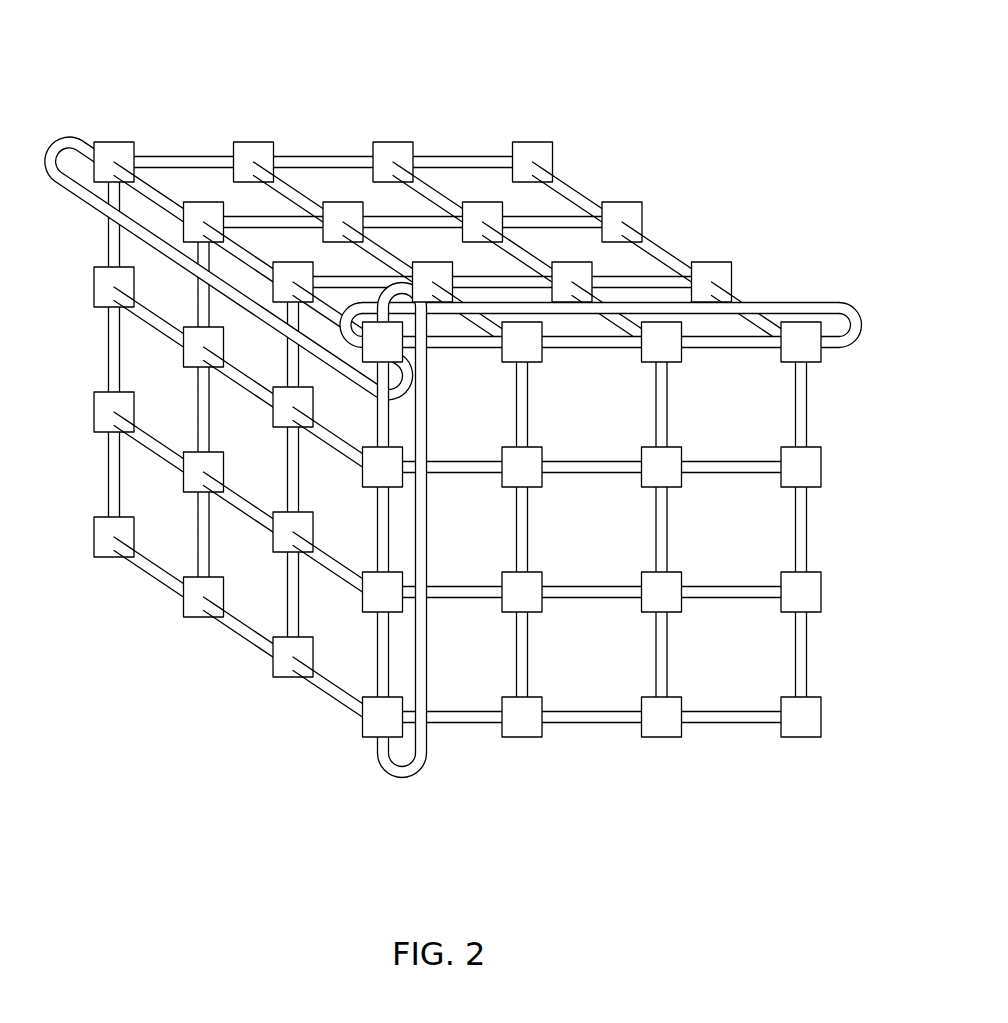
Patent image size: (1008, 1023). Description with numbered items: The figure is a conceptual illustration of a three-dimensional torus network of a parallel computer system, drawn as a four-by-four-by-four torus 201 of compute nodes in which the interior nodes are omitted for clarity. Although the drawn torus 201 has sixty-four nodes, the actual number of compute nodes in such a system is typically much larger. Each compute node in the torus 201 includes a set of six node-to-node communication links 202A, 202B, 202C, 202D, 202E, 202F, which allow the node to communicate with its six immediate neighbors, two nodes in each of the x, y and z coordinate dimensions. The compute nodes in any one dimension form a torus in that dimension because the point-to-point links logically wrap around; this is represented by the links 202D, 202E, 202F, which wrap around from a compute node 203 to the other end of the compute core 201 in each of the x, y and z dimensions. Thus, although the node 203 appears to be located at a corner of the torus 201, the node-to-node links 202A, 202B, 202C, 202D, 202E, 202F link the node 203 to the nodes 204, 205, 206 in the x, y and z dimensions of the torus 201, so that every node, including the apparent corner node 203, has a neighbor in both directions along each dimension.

The torus 201 is at (453, 414).
The node-to-node communication link 202A is at (446, 346).
The node-to-node communication link 202B is at (390, 425).
The node-to-node communication link 202C is at (344, 309).
The node-to-node communication link 202D is at (823, 300).
The node-to-node communication link 202E is at (400, 777).
The node-to-node communication link 202F is at (60, 137).
The compute node 203 is at (370, 352).
The node 204 is at (114, 148).
The node 205 is at (803, 348).
The node 206 is at (368, 736).